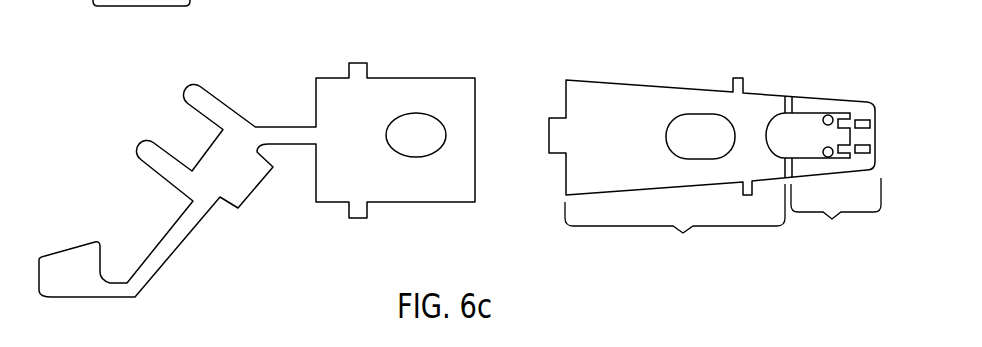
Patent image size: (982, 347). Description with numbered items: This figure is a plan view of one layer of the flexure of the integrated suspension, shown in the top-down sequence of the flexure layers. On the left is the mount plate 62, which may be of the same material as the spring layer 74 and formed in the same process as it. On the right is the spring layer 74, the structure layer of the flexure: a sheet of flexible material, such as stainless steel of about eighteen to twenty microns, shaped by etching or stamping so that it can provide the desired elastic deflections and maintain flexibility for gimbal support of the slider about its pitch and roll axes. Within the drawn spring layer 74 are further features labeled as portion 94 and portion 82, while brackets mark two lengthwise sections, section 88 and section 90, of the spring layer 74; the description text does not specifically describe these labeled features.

The mount plate 62 is at (423, 87).
The spring layer 74 is at (603, 108).
The latch contact portion 94 is at (823, 118).
The contact tabs 82 is at (872, 122).
The first section 88 is at (675, 226).
The second section 90 is at (836, 215).